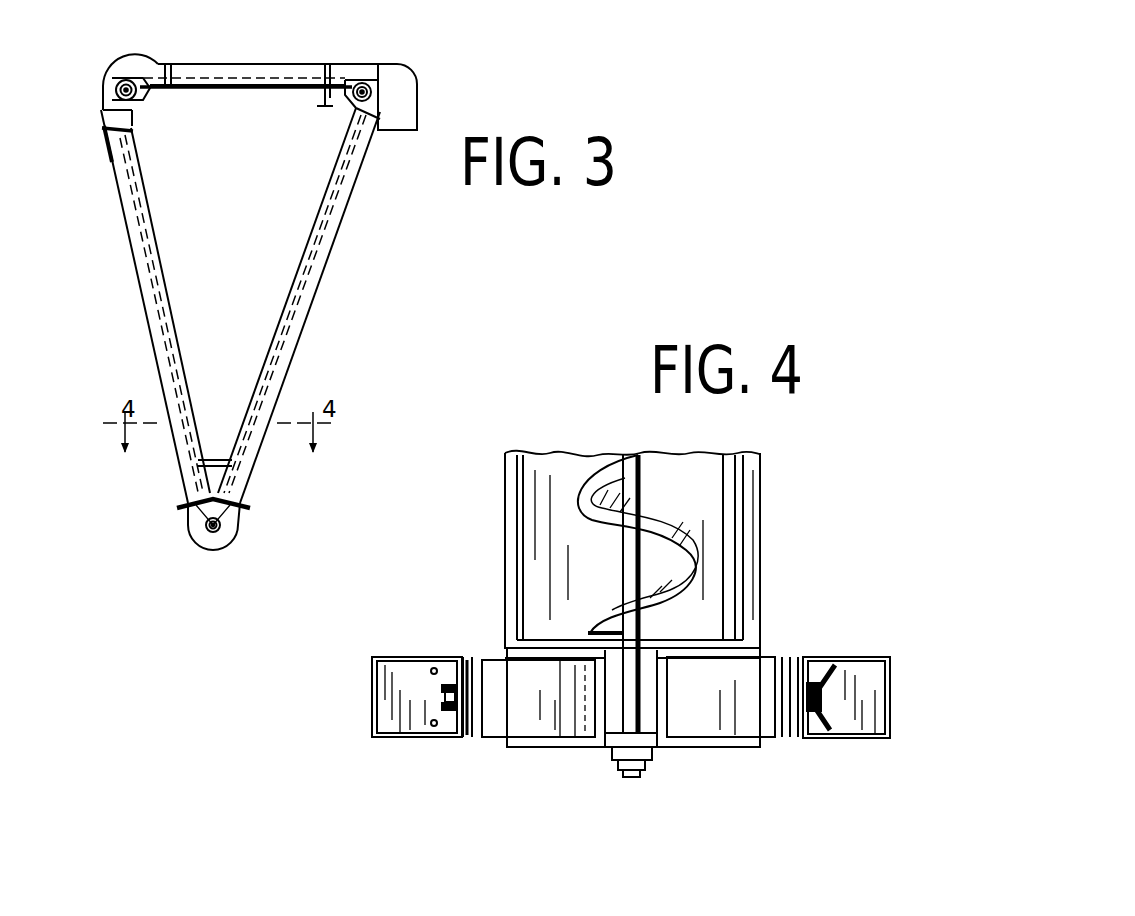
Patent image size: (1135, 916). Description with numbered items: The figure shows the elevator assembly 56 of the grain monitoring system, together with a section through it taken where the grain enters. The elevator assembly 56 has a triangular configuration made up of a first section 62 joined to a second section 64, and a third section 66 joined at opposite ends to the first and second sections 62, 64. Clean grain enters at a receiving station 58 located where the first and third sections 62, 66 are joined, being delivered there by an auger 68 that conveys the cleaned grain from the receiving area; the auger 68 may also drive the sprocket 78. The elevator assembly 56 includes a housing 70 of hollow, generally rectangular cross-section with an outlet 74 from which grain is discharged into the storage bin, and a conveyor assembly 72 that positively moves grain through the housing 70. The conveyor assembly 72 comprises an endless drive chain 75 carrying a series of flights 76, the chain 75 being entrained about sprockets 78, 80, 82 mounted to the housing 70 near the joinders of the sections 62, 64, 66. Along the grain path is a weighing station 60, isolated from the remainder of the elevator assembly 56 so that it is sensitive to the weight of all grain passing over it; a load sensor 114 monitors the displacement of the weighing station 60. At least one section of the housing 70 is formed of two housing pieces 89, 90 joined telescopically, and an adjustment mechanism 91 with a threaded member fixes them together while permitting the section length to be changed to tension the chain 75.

In FIG. 3, the elevator assembly 56 is at (258, 304).
In FIG. 4, the elevator assembly 56 is at (640, 625).
In FIG. 3, the receiving station 58 is at (216, 455).
In FIG. 4, the receiving station 58 is at (650, 687).
In FIG. 3, the weighing station 60 is at (267, 97).
In FIG. 3, the first section 62 is at (157, 320).
In FIG. 3, the second section 64 is at (275, 72).
In FIG. 3, the third section 66 is at (300, 327).
In FIG. 4, the third section 66 is at (778, 677).
In FIG. 4, the auger 68 is at (665, 560).
In FIG. 3, the housing 70 is at (294, 384).
In FIG. 4, the housing 70 is at (366, 685).
In FIG. 4, the conveyor assembly 72 is at (443, 613).
In FIG. 3, the outlet 74 is at (395, 120).
In FIG. 4, the drive chain 75 is at (442, 696).
In FIG. 4, the flights 76 is at (390, 706).
In FIG. 3, the sprocket 78 is at (218, 530).
In FIG. 3, the sprocket 80 is at (124, 86).
In FIG. 3, the sprocket 82 is at (370, 86).
In FIG. 3, the housing piece 89 is at (127, 117).
In FIG. 3, the housing piece 90 is at (136, 166).
In FIG. 3, the adjustment mechanism 91 is at (105, 147).
In FIG. 3, the load sensor 114 is at (316, 94).